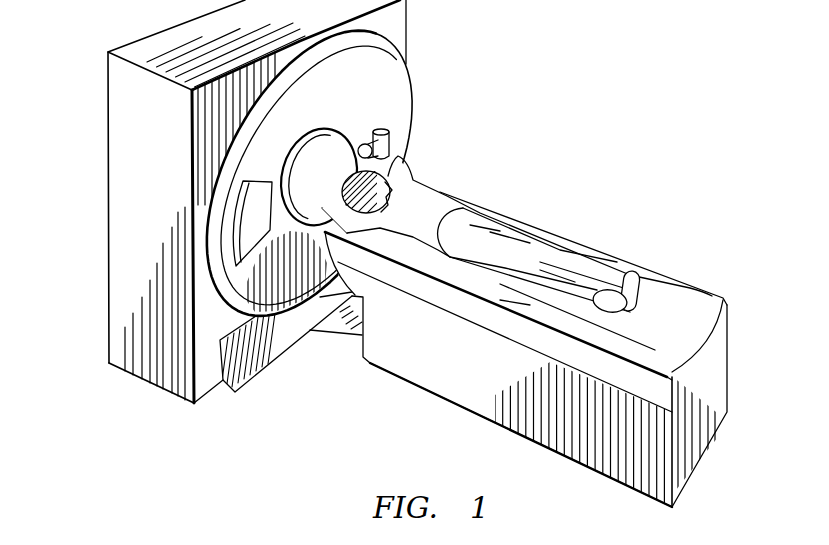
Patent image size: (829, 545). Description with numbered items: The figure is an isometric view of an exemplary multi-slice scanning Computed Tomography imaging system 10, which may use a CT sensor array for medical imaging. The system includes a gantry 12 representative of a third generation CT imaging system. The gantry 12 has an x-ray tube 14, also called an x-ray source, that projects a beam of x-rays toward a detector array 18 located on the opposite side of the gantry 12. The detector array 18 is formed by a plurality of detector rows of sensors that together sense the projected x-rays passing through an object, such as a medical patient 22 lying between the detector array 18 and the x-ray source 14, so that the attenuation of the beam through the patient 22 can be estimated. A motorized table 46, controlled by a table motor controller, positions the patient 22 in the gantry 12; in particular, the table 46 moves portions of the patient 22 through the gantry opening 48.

The CT imaging system 10 is at (388, 255).
The gantry 12 is at (358, 97).
The x-ray tube 14 is at (392, 134).
The detector array 18 is at (254, 231).
The patient 22 is at (432, 205).
The motorized table 46 is at (448, 400).
The gantry opening 48 is at (312, 164).